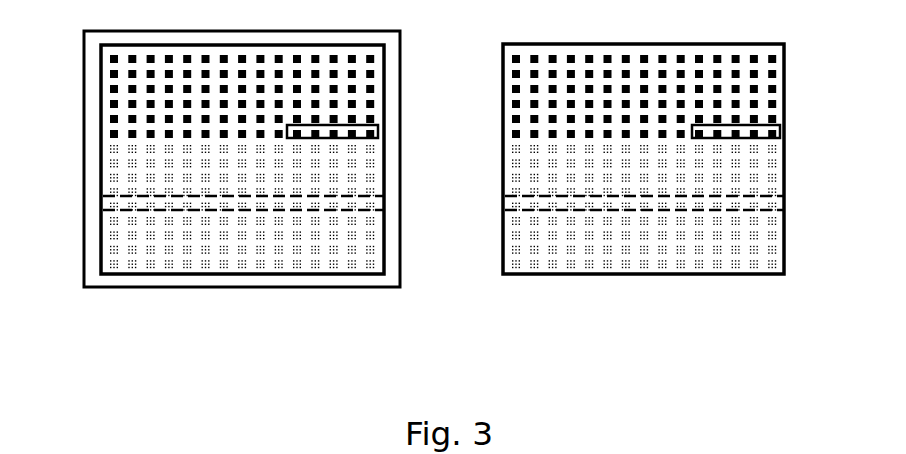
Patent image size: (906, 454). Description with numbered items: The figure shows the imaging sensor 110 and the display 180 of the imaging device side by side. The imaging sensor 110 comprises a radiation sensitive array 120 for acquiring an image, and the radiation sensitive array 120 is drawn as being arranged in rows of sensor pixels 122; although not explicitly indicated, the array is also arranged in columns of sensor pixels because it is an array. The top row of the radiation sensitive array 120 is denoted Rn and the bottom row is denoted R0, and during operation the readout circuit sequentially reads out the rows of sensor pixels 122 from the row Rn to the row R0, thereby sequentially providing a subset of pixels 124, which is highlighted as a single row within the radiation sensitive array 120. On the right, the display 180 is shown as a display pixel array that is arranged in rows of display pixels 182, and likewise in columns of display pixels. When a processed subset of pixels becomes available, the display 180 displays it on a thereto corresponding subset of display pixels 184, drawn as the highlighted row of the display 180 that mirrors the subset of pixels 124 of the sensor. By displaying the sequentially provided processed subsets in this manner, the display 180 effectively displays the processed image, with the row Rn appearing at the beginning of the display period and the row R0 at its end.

The imaging sensor 110 is at (202, 288).
The radiation sensitive array 120 is at (267, 274).
The rows of sensor pixels 122 is at (117, 203).
The subset of pixels 124 is at (378, 129).
The display 180 is at (640, 280).
The rows of display pixels 182 is at (512, 204).
The subset of display pixels 184 is at (780, 129).
The top row Rn is at (113, 58).
The bottom row R0 is at (112, 262).